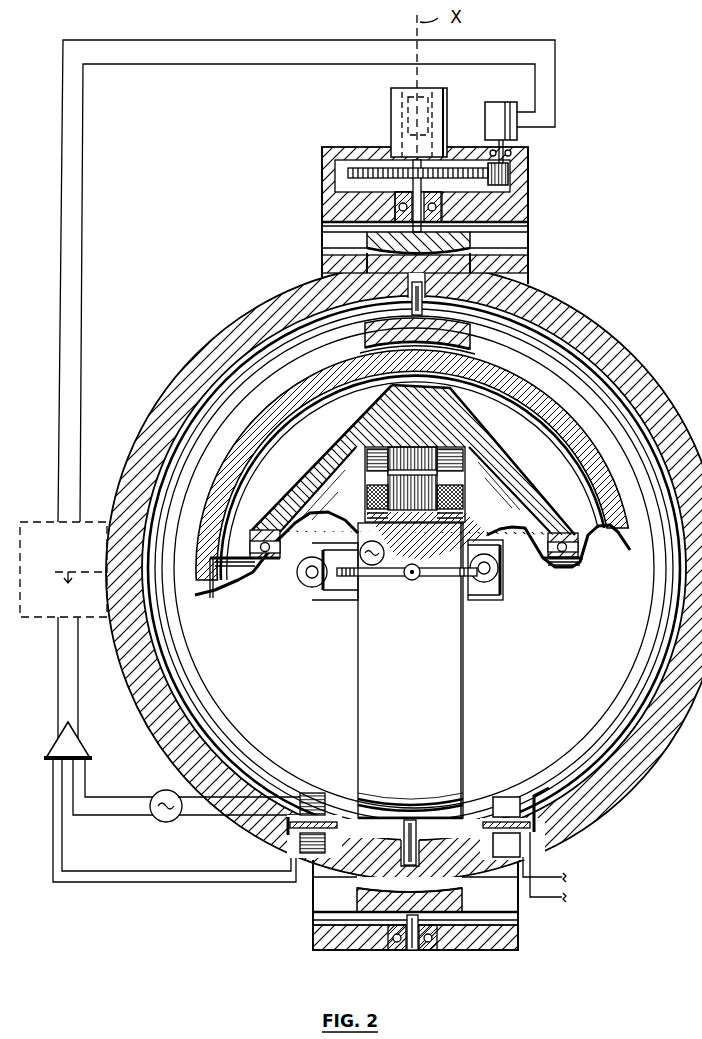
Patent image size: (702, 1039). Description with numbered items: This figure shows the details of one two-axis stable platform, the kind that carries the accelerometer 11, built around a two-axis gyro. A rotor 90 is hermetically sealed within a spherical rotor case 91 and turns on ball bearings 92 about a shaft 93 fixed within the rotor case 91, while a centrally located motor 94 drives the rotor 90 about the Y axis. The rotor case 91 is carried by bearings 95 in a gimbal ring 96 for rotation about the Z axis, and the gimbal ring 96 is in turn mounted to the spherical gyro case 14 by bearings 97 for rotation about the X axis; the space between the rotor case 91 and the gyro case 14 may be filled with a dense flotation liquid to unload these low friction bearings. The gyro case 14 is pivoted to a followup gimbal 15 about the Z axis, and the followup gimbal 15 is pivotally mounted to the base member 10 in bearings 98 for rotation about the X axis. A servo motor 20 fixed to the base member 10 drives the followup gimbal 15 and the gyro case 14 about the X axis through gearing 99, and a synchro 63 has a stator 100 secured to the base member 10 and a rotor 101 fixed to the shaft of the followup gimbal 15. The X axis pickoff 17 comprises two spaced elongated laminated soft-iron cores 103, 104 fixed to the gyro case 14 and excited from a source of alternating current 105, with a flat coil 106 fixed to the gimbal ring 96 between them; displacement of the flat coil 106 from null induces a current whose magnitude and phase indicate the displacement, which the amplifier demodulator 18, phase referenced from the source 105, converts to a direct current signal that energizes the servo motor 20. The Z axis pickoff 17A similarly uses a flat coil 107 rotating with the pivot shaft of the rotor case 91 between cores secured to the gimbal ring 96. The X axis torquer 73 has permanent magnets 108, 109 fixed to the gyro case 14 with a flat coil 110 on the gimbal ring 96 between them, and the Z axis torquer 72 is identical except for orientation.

The base member 10 is at (529, 200).
The accelerometer 11 is at (40, 612).
The gyro case 14 is at (264, 326).
The followup gimbal 15 is at (470, 250).
The X axis pickoff 17 is at (298, 790).
The Z axis pickoff 17A is at (306, 592).
The amplifier demodulator 18 is at (80, 742).
The servo motor 20 is at (496, 112).
The synchro 63 is at (401, 125).
The Z axis torquer 72 is at (502, 557).
The X axis torquer 73 is at (527, 801).
The rotor 90 is at (497, 466).
The rotor case 91 is at (564, 414).
The ball bearings 92 is at (578, 543).
The shaft 93 is at (225, 573).
The motor 94 is at (457, 502).
The bearings 95 is at (411, 582).
The gimbal ring 96 is at (466, 332).
The bearings 97 is at (422, 299).
The bearings 98 is at (431, 951).
The gearing 99 is at (372, 176).
The stator 100 is at (390, 101).
The rotor 101 is at (415, 105).
The laminated soft-iron core 103 is at (326, 809).
The laminated soft-iron core 104 is at (300, 843).
The source of A.-C. current 105 is at (156, 816).
The flat coil 106 is at (340, 827).
The flat coil 107 is at (297, 578).
The permanent magnet 108 is at (509, 797).
The permanent magnet 109 is at (540, 853).
The flat coil 110 is at (483, 827).